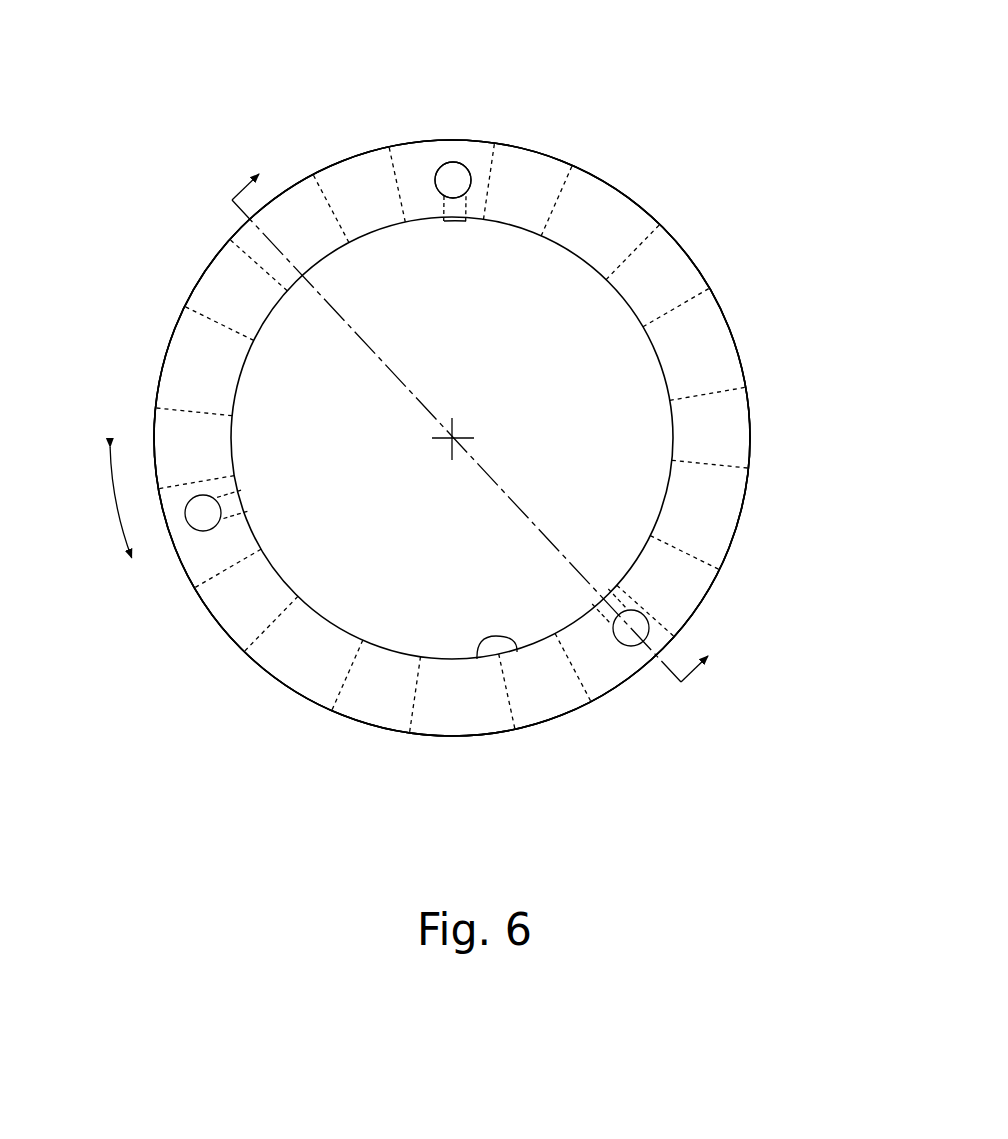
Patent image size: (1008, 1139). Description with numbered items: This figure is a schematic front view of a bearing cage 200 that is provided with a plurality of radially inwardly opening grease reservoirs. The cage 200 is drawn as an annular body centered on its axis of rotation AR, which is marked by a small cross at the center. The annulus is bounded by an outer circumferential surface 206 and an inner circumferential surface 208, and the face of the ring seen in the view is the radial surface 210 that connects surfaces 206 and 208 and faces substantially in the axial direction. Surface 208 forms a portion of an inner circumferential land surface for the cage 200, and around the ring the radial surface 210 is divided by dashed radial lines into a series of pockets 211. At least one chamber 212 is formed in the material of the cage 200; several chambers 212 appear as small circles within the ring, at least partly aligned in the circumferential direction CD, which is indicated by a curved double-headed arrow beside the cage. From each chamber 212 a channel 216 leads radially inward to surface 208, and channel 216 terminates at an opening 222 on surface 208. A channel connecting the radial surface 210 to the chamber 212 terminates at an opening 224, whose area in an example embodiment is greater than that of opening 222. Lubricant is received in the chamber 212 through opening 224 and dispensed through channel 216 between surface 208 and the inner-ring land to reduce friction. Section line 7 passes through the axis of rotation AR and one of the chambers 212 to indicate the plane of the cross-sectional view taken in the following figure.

The bearing cage 200 is at (777, 140).
The circumferential surface 206 is at (656, 215).
The circumferential surface 208 is at (478, 650).
The radial surface 210 is at (712, 328).
The pockets 211 is at (452, 438).
The chamber 212 is at (450, 173).
The channel 216 is at (452, 209).
The opening 222 is at (453, 219).
The opening 224 is at (436, 181).
The axis of rotation AR is at (455, 437).
The circumferential direction CD is at (110, 499).
The section line 7- 7 is at (478, 415).